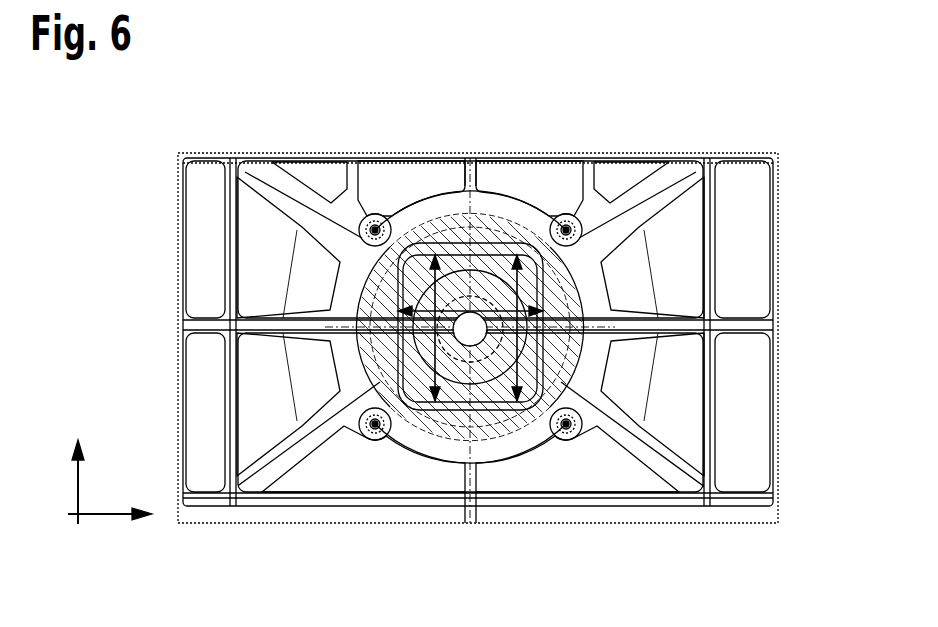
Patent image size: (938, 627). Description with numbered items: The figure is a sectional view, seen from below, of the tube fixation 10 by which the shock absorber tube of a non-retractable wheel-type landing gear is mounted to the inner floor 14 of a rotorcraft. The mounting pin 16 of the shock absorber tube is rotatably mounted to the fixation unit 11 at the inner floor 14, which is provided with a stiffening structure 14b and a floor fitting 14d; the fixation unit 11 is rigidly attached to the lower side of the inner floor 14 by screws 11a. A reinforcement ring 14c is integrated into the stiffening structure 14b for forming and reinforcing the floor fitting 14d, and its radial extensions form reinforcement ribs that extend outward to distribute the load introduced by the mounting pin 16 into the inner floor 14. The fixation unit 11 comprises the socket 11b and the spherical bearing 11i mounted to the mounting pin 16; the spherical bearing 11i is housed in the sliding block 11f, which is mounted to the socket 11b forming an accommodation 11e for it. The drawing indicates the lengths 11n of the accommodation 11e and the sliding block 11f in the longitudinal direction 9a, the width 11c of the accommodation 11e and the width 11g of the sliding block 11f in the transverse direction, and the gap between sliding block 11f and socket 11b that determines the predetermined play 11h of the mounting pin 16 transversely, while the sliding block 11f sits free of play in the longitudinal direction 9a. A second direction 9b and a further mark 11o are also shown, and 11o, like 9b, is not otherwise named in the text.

The longitudinal direction 9a is at (118, 516).
The second direction axis 9b is at (77, 491).
The tube fixation 10 is at (320, 286).
The fixation unit 11 is at (332, 360).
The screws 11a is at (373, 433).
The socket 11b is at (407, 232).
The width of the accommodation 11c is at (523, 380).
The accommodation 11e is at (503, 416).
The sliding block 11f is at (425, 266).
The width of the sliding block 11g is at (435, 373).
The predetermined play 11h is at (420, 408).
The spherical bearing 11i is at (500, 287).
The lengths 11n is at (452, 311).
The receptacle ring 11o is at (527, 355).
The inner floor 14 is at (203, 153).
The stiffening structure 14b is at (725, 221).
The reinforcement ring 14c is at (349, 304).
The floor fitting 14d is at (614, 284).
The mounting pin 16 is at (483, 357).